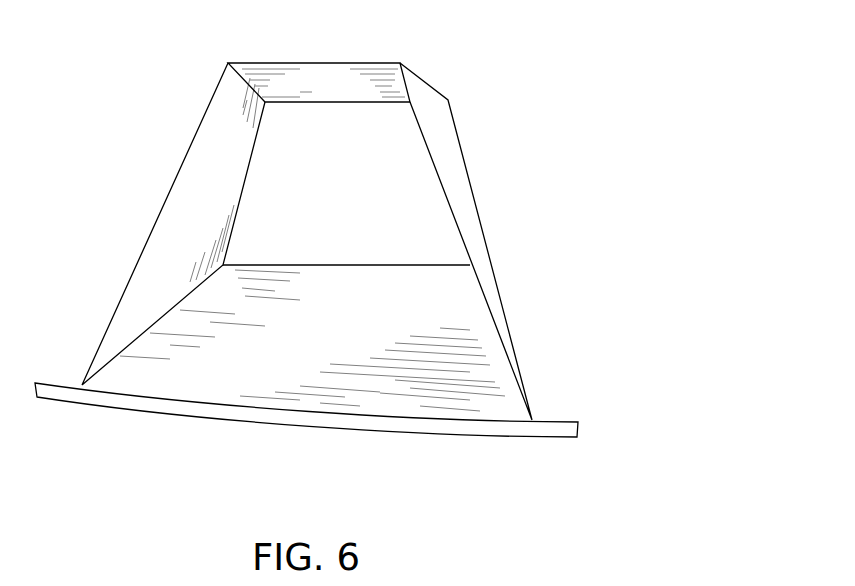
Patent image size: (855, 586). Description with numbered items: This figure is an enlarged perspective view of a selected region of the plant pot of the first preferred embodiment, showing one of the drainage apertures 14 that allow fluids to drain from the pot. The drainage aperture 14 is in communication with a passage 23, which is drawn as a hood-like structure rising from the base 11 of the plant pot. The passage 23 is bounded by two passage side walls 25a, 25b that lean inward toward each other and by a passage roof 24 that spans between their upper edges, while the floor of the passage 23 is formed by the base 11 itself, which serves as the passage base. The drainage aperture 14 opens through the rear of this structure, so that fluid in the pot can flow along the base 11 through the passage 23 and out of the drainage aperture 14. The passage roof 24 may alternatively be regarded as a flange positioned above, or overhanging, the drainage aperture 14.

The passage 23 is at (425, 46).
The passage roof 24 is at (312, 90).
The passage side wall 25a is at (174, 248).
The passage side wall 25b is at (455, 216).
The drainage aperture 14 is at (363, 192).
The base 11 is at (285, 370).